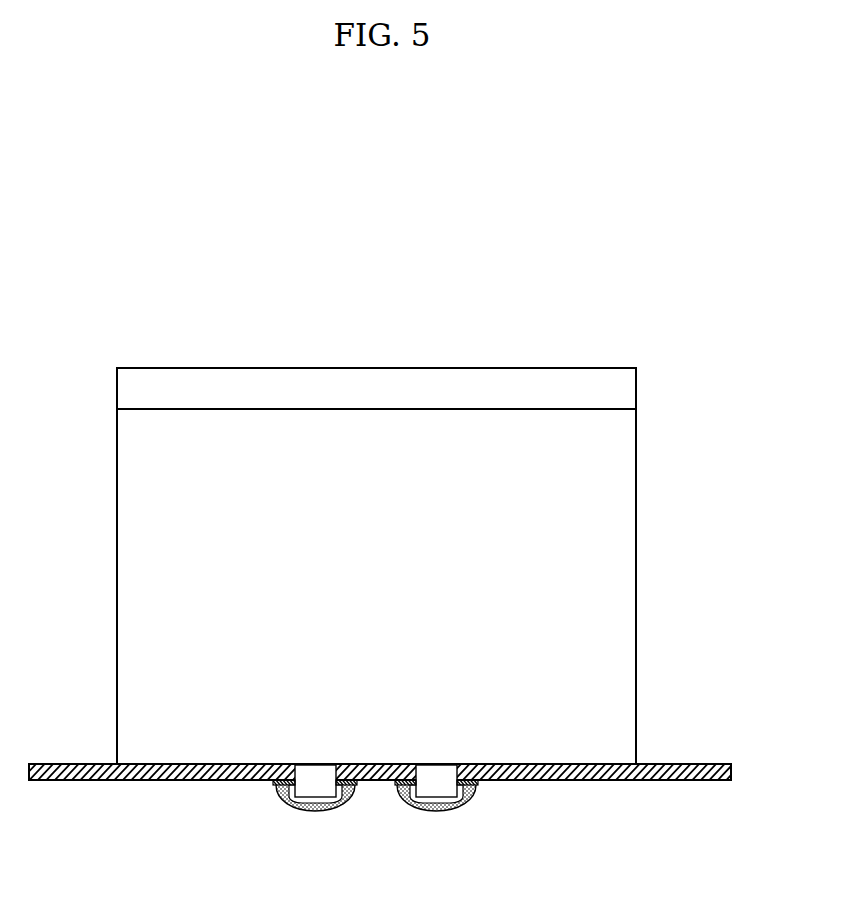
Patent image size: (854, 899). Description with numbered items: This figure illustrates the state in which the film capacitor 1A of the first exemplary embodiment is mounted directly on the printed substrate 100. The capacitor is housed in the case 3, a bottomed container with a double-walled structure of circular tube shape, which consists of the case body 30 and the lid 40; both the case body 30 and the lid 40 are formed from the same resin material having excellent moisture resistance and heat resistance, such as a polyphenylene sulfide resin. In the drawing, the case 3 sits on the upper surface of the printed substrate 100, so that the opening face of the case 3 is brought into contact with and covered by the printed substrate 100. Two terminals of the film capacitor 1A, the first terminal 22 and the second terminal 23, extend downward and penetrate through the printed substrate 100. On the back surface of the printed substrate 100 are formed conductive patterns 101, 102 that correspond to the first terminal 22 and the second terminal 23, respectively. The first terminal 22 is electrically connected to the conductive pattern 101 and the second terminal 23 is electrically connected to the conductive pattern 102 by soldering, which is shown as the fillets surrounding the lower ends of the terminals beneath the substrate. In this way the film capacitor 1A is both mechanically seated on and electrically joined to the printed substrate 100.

The film capacitor 1A is at (143, 347).
The case 3 is at (112, 519).
The lid 40 is at (375, 368).
The case body 30 is at (636, 568).
The printed substrate 100 is at (678, 763).
The second terminal 23 is at (310, 787).
The first terminal 22 is at (435, 787).
The conductive pattern 102 is at (277, 786).
The conductive pattern 101 is at (476, 786).